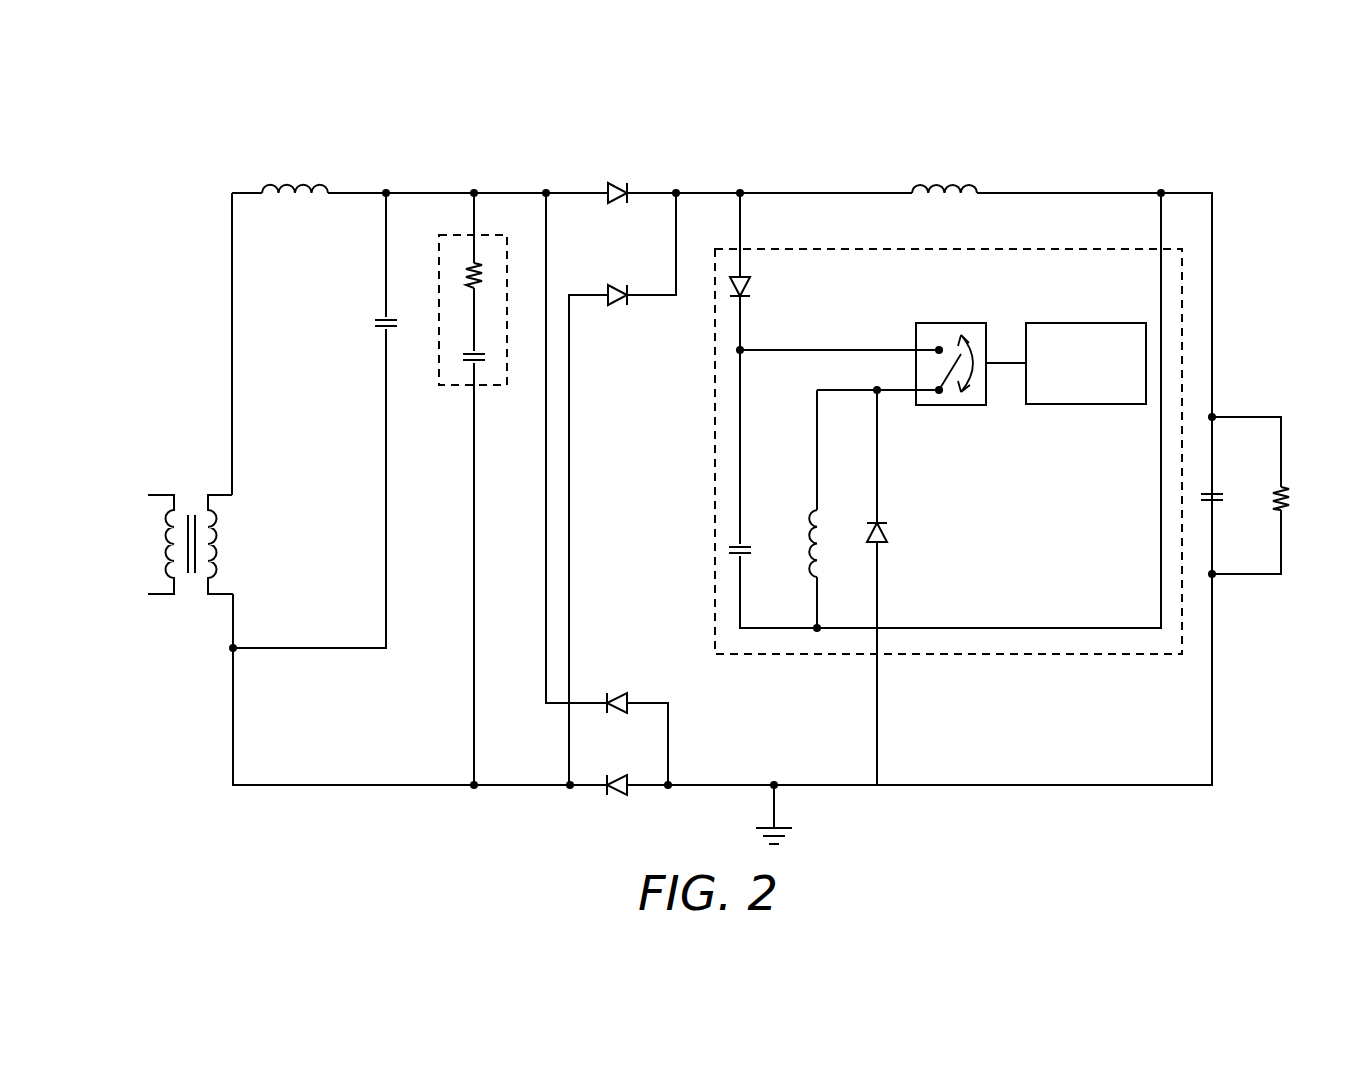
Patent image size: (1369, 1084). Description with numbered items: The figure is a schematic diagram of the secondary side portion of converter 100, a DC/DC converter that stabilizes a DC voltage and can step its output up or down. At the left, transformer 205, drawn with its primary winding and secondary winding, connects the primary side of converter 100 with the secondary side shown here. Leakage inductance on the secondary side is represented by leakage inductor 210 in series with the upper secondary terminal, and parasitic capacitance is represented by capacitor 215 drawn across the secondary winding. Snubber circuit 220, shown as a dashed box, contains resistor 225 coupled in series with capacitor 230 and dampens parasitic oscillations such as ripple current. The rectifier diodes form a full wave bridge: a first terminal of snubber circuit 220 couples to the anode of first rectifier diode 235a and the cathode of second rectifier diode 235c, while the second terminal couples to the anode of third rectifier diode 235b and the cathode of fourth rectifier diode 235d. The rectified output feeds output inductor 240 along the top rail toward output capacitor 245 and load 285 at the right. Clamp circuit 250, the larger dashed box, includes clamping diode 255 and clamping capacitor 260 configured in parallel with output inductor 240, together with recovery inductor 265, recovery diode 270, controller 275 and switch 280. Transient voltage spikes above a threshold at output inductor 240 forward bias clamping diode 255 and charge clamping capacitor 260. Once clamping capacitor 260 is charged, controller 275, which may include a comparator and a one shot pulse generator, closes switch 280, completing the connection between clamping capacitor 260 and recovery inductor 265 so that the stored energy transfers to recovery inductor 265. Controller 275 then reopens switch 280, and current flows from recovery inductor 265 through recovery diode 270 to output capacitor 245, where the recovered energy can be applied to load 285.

The converter 100 is at (190, 160).
The transformer 205 is at (216, 494).
The leakage inductor 210 is at (327, 187).
The capacitor 215 is at (385, 318).
The snubber circuit 220 is at (495, 222).
The resistor 225 is at (471, 262).
The capacitor 230 is at (470, 364).
The first rectifier diode 235a is at (621, 190).
The third rectifier diode 235b is at (614, 300).
The second rectifier diode 235c is at (610, 695).
The fourth rectifier diode 235d is at (610, 792).
The output inductor 240 is at (940, 188).
The output capacitor 245 is at (1218, 496).
The clamp circuit 250 is at (870, 233).
The clamping diode 255 is at (748, 294).
The clamping capacitor 260 is at (737, 546).
The recovery inductor 265 is at (815, 509).
The recovery diode 270 is at (880, 522).
The controller 275 is at (1080, 322).
The switch 280 is at (958, 322).
The load 285 is at (1283, 492).